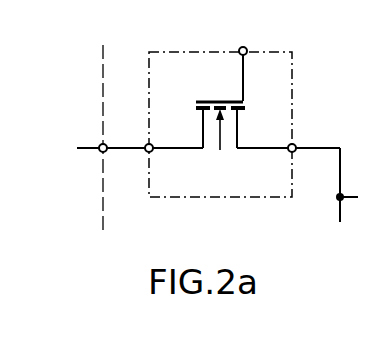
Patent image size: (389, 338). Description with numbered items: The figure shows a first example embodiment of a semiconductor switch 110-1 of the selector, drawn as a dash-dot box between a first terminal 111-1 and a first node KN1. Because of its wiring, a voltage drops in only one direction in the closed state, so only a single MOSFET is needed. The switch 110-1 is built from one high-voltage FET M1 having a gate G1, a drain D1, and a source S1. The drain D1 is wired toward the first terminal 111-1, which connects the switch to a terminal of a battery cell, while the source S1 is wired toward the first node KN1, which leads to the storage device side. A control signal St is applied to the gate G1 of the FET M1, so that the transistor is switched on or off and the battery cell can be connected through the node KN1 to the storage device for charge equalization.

The first terminal 111-1 is at (98, 143).
The first semiconductor switch 110-1 is at (293, 96).
The control signal St is at (249, 34).
The gate G1 is at (227, 78).
The first FET M1 is at (200, 94).
The first drain D1 is at (174, 136).
The first source S1 is at (288, 136).
The first node KN1 is at (337, 195).